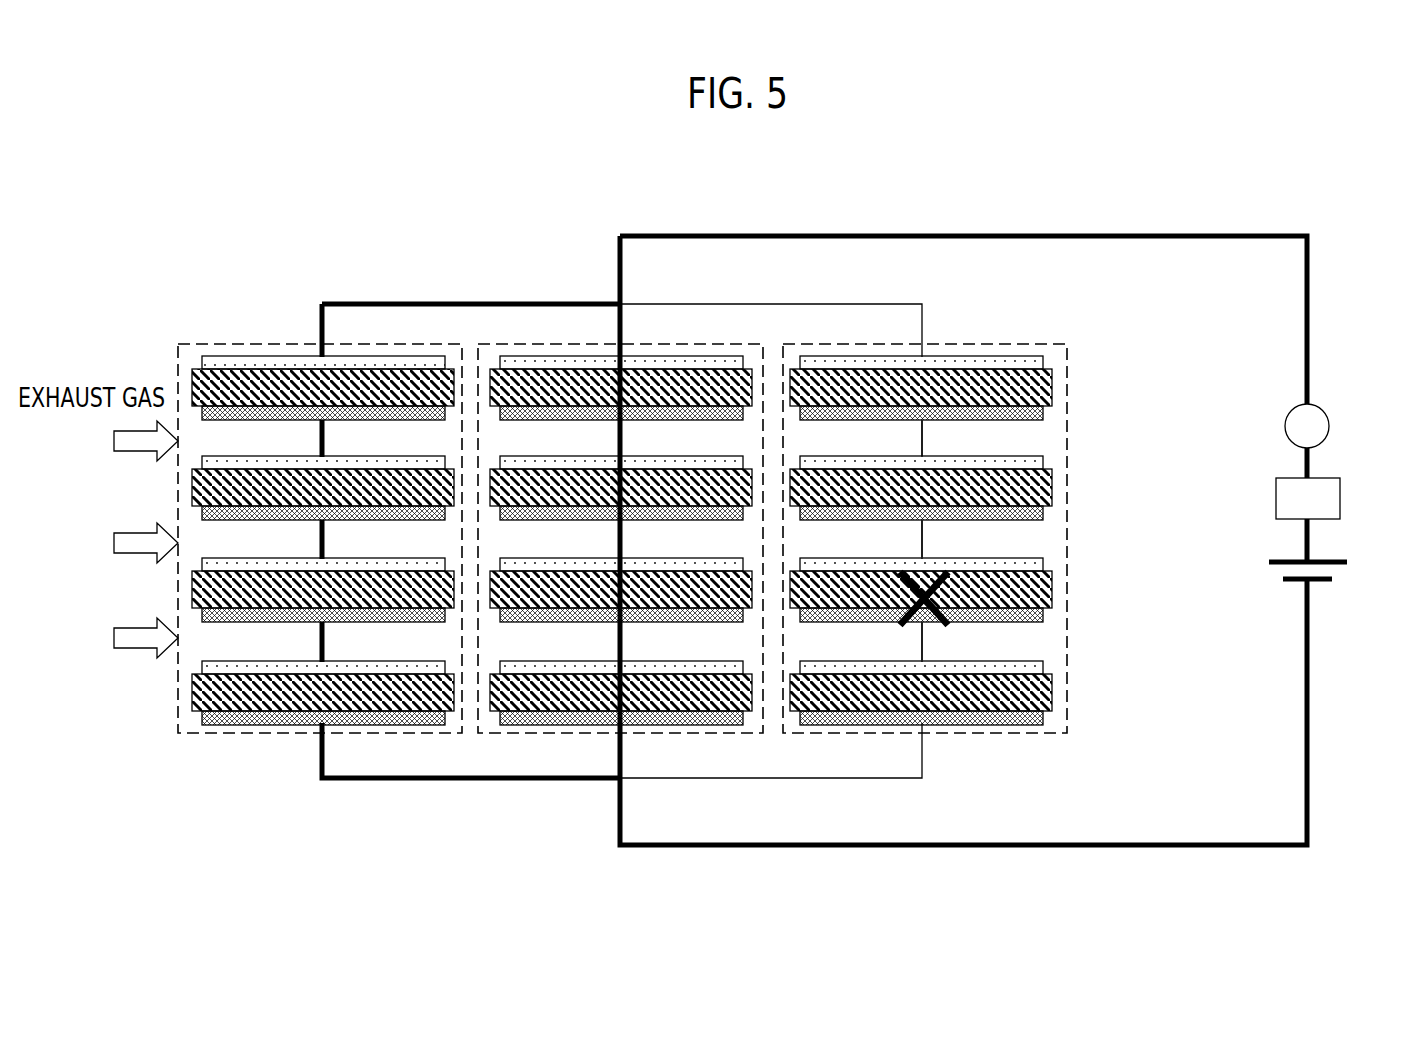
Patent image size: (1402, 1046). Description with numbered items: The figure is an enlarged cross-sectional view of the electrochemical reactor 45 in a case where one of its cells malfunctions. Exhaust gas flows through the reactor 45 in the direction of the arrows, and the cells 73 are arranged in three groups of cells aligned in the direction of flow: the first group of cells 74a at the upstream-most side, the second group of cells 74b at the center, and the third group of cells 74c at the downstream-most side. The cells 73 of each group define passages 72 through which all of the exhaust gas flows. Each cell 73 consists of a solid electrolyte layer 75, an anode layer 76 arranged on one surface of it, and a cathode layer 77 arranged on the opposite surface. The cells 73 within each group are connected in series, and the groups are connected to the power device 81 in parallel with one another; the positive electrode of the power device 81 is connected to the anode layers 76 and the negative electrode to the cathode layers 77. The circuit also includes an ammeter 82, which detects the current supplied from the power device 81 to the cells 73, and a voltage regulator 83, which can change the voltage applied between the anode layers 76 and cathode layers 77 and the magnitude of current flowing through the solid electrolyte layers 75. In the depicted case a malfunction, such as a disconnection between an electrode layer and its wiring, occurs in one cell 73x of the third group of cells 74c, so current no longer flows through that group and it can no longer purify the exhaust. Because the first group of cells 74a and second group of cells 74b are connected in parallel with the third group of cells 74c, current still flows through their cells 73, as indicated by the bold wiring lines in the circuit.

The reactor 45 is at (1279, 207).
The passage 72 is at (1053, 445).
The cell 73 is at (318, 243).
The malfunctioning cell 73x is at (1053, 597).
The first group of cells 74a is at (401, 733).
The second group of cells 74b is at (678, 733).
The third group of cells 74c is at (982, 733).
The solid electrolyte layer 75 is at (252, 376).
The anode layer 76 is at (296, 363).
The cathode layer 77 is at (213, 377).
The power device 81 is at (1322, 583).
The ammeter 82 is at (1322, 405).
The voltage regulator 83 is at (1330, 478).